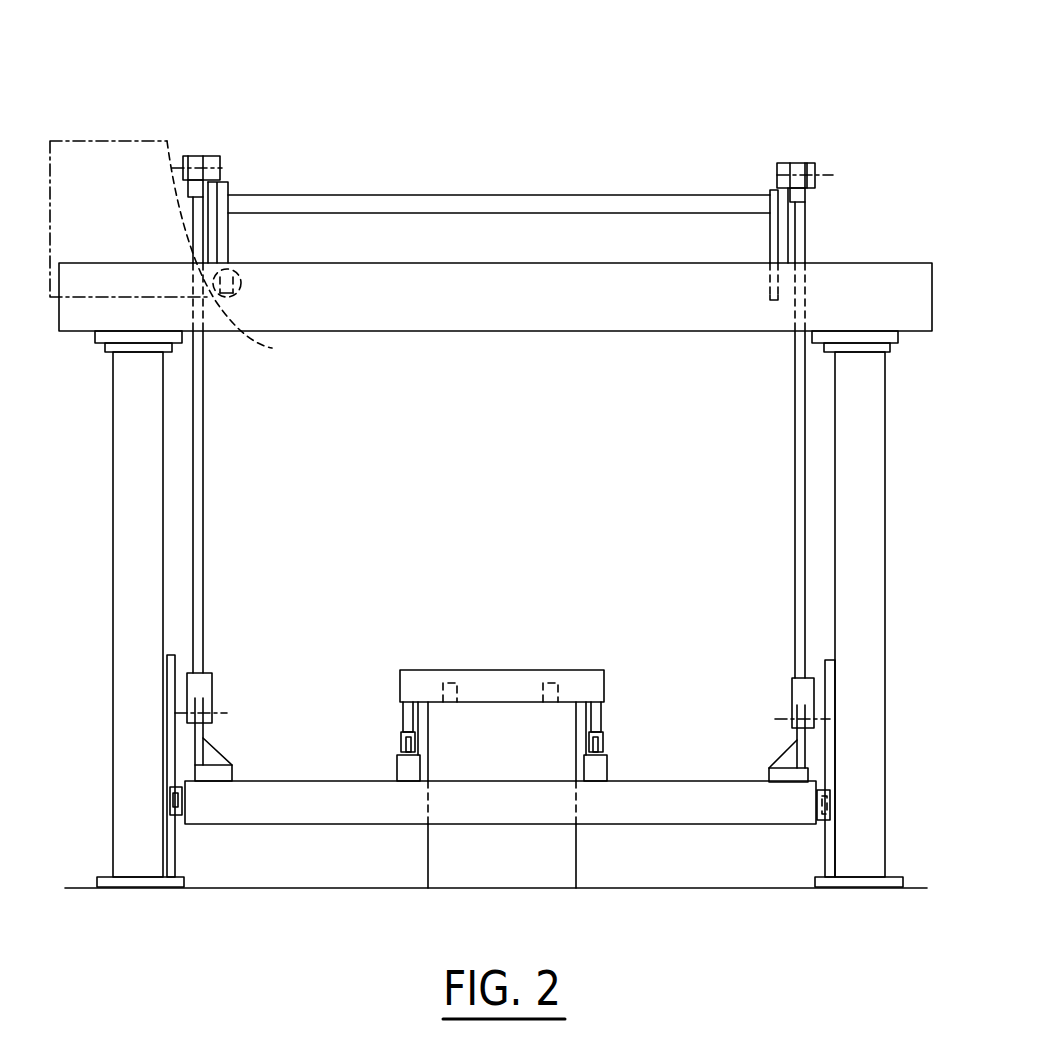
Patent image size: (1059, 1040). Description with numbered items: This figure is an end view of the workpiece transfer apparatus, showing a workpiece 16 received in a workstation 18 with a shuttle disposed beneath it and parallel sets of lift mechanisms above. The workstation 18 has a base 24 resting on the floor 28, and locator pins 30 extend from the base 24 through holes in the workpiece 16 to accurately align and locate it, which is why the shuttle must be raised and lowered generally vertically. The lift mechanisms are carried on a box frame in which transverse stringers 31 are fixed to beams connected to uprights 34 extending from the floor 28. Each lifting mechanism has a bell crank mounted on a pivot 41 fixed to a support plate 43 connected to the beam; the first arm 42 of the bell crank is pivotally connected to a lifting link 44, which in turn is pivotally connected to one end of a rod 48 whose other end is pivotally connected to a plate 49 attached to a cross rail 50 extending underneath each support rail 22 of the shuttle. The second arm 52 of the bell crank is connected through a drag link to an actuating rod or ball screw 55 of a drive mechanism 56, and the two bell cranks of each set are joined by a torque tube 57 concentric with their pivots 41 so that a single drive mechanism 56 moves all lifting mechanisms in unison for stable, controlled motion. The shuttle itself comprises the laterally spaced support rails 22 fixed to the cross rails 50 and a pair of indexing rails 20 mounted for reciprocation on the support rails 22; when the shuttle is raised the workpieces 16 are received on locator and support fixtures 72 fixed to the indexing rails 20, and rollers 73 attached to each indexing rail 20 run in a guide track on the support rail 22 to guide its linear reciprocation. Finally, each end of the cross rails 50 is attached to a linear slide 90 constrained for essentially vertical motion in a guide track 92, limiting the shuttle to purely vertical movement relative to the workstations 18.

The workpiece 16 is at (493, 675).
The workstation 18 is at (569, 643).
The indexing rail 20 is at (403, 730).
The support rail 22 is at (400, 765).
The base 24 is at (442, 850).
The floor 28 is at (608, 889).
The locator pin 30 is at (446, 676).
The transverse stringer 31 is at (880, 273).
The upright 34 is at (884, 497).
The pivot 41 is at (225, 203).
The first arm 42 is at (770, 190).
The support plate 43 is at (213, 234).
The lifting link 44 is at (220, 168).
The rod 48 is at (205, 483).
The plate 49 is at (200, 737).
The cross rail 50 is at (670, 824).
The second arm 52 is at (225, 245).
The actuating rod or ball screw 55 is at (272, 348).
The drive mechanism 56 is at (128, 140).
The torque tube 57 is at (510, 200).
The locator and support fixture 72 is at (403, 712).
The roller 73 is at (402, 742).
The linear slide 90 is at (182, 805).
The guide track 92 is at (178, 748).